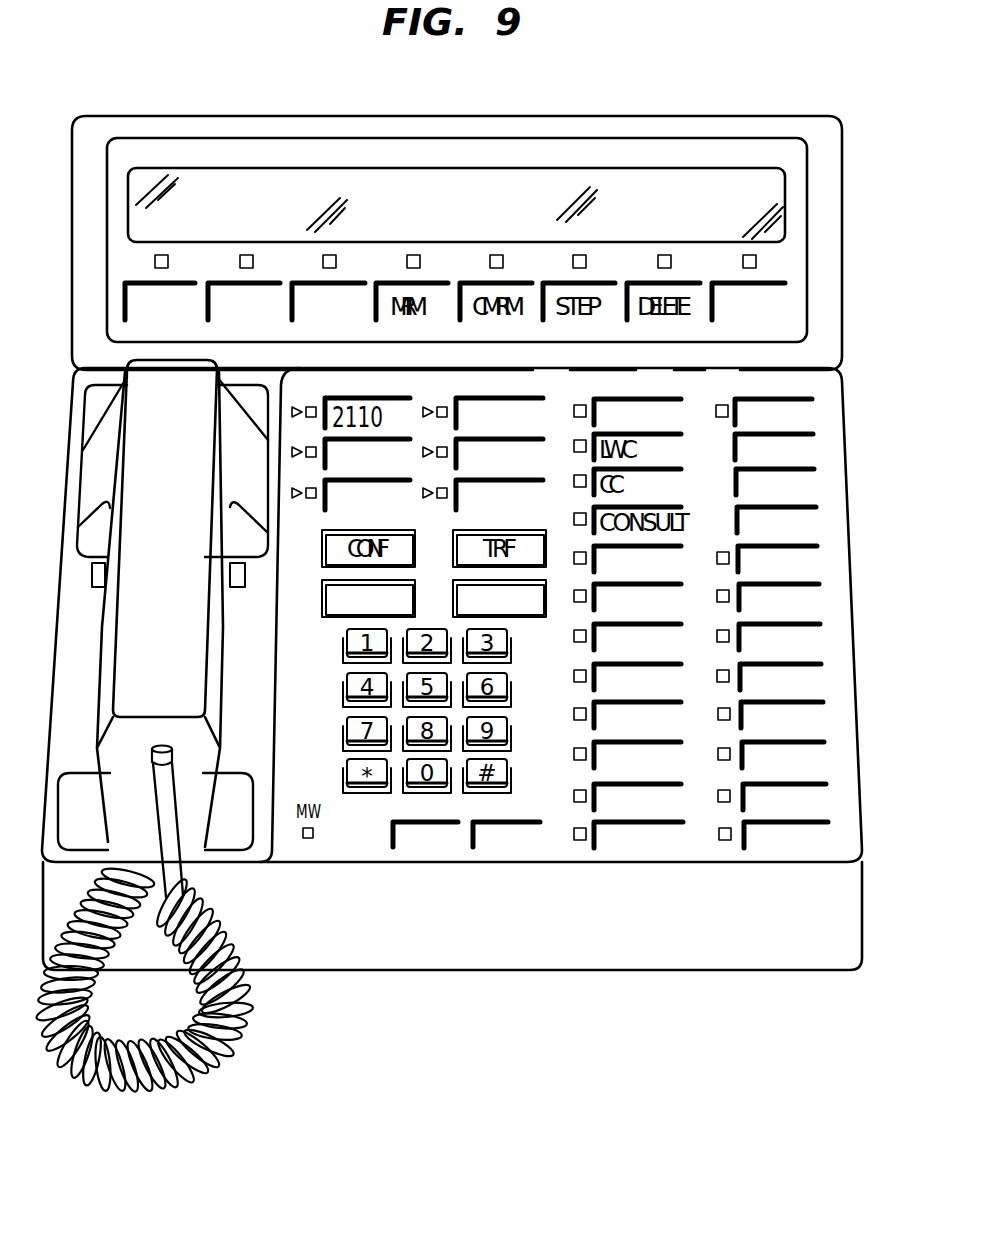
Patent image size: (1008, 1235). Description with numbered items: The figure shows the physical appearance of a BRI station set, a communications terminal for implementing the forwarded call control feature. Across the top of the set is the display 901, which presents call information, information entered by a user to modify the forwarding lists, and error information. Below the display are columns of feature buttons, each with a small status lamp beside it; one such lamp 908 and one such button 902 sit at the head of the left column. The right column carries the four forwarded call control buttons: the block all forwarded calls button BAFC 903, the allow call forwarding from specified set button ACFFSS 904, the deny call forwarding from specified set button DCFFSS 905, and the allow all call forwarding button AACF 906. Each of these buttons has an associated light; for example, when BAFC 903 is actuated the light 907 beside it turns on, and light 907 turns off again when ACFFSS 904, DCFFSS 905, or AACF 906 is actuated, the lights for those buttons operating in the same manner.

The display 901 is at (647, 184).
The send all calls (SAC) feature button 902 is at (637, 410).
The BAFC button 903 is at (795, 420).
The ACFFSS button 904 is at (808, 450).
The DCFFSS button 905 is at (808, 487).
The AACF button 906 is at (790, 527).
The light 907 is at (721, 403).
The feature button status lamp 908 is at (578, 403).